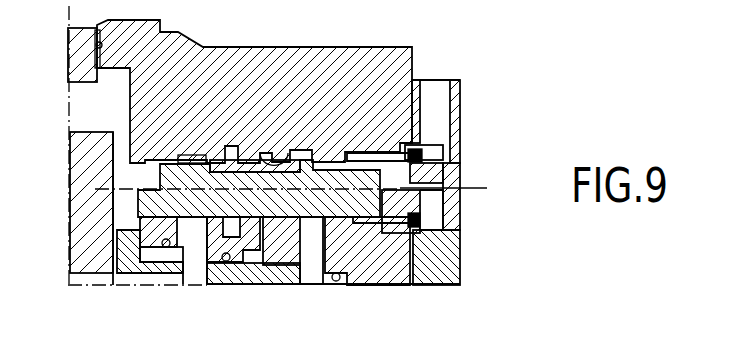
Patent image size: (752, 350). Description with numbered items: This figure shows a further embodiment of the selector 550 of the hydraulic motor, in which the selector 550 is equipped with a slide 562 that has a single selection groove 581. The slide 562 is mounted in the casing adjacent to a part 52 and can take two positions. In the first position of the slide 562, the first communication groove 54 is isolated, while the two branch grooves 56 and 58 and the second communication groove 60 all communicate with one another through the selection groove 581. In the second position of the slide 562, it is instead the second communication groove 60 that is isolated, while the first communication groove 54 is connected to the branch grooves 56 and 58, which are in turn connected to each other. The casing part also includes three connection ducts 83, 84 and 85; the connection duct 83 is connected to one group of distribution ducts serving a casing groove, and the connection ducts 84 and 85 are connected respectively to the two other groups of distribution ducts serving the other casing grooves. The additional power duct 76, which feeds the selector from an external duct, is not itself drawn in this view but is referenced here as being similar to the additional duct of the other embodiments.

The additional power duct 76 is at (254, 81).
The shaft 52 is at (145, 183).
The first communication groove 54 is at (188, 160).
The branch groove 56 is at (258, 160).
The branch groove 58 is at (290, 162).
The second communication groove 60 is at (340, 160).
The selection groove 581 is at (259, 188).
The connection duct 83 is at (193, 240).
The connection duct 84 is at (250, 258).
The connection duct 85 is at (315, 262).
The selector 550 is at (470, 129).
The slide 562 is at (418, 180).